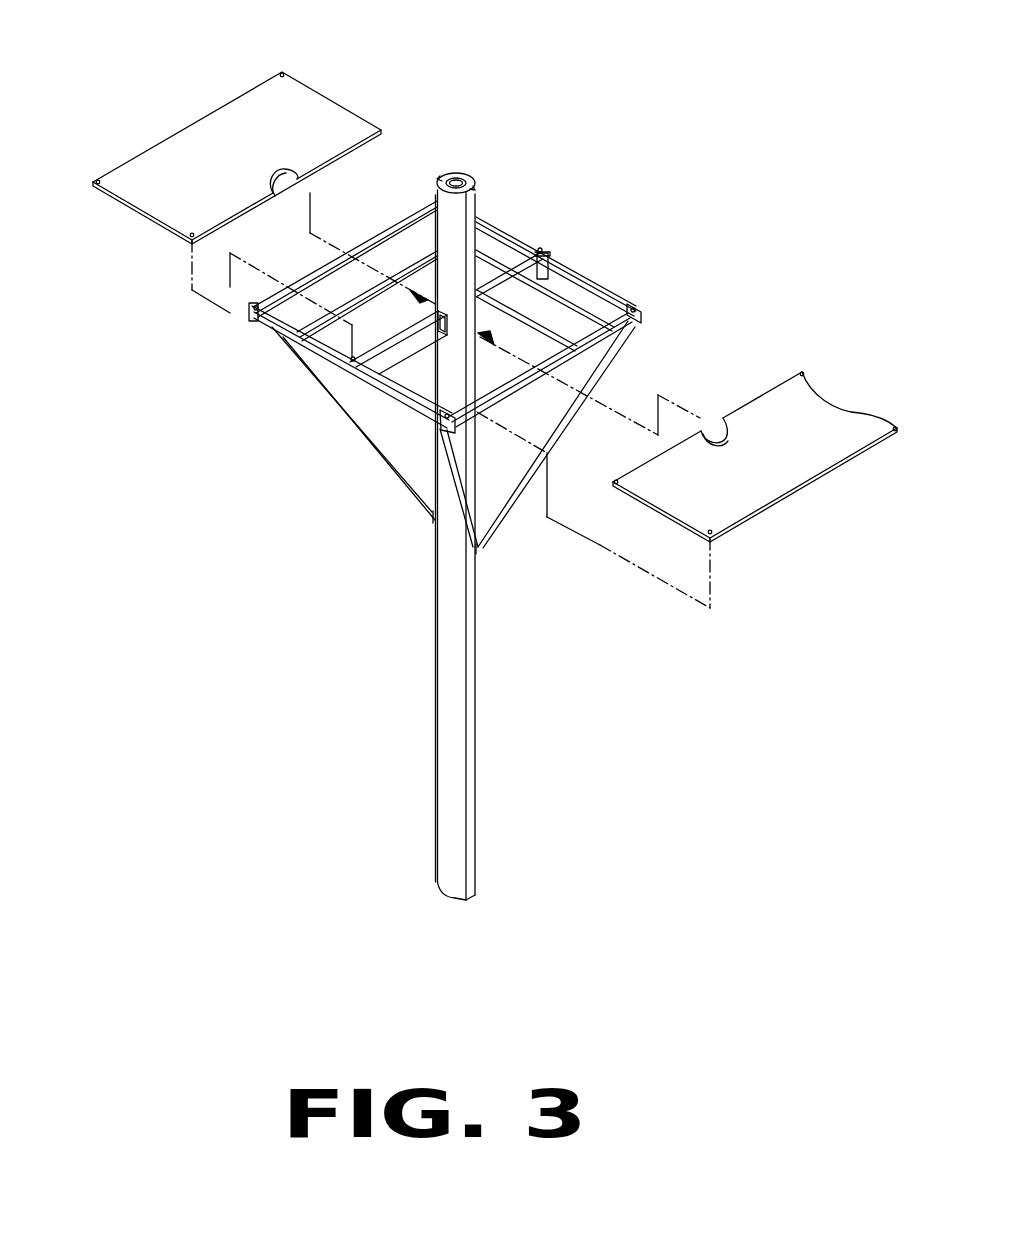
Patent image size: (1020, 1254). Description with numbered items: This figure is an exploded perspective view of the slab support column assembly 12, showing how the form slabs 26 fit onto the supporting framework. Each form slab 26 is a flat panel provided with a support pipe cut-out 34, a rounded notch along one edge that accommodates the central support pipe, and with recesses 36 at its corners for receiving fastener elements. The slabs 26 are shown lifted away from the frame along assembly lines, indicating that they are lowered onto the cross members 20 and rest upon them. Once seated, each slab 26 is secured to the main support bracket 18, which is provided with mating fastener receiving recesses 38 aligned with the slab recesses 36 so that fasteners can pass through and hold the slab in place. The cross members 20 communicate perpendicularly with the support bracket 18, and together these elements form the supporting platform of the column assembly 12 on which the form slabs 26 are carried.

The slab support column assembly 12 is at (540, 108).
The main support bracket 18 is at (330, 367).
The cross members 20 is at (508, 283).
The form slabs 26 is at (293, 112).
The support pipe cut-out 34 is at (270, 172).
The recesses 36 is at (802, 372).
The fastener receiving recesses 38 is at (537, 256).